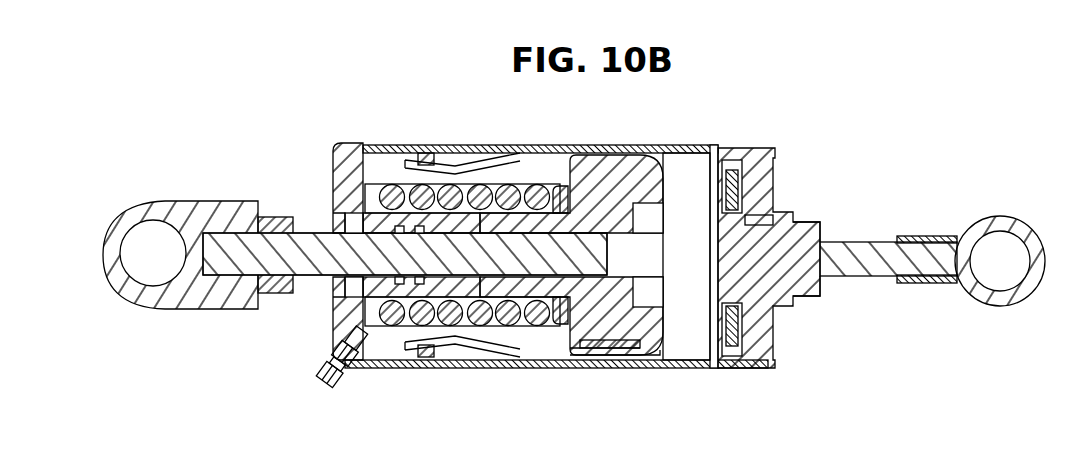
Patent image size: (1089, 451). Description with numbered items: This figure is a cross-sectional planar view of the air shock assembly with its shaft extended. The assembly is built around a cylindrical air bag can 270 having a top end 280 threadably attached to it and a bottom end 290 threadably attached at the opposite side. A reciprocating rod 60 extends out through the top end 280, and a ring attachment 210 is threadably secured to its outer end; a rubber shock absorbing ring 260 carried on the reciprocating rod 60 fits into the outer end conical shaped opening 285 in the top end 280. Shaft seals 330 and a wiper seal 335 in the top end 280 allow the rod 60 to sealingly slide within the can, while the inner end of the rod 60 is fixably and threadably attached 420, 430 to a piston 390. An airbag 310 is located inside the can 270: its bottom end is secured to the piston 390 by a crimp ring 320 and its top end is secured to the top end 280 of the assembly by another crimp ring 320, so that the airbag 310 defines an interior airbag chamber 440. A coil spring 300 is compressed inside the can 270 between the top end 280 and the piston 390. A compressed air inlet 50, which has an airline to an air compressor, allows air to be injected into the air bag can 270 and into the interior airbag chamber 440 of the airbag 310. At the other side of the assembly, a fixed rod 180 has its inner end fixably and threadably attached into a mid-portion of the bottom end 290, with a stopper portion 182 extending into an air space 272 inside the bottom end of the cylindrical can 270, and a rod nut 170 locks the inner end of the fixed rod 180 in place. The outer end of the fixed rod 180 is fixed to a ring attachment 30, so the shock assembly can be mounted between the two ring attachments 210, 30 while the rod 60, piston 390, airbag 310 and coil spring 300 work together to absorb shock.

The ring attachment 30 is at (1008, 225).
The compressed air inlet 50 is at (335, 378).
The reciprocating rod 60 is at (310, 240).
The rod nut 170 is at (821, 225).
The fixed rod 180 is at (848, 270).
The stopper portion 182 is at (738, 218).
The ring attachment 210 is at (130, 212).
The rubber shock absorbing ring 260 is at (292, 213).
The cylindrical air bag can 270 is at (685, 145).
The air space 272 is at (697, 335).
The top end 280 is at (333, 318).
The conical shaped opening 285 is at (330, 292).
The bottom end 290 is at (768, 150).
The coil spring 300 is at (515, 330).
The airbag 310 is at (545, 150).
The crimp ring 320 is at (435, 148).
The shaft seal 330 is at (413, 330).
The wiper seal 335 is at (340, 200).
The piston 390 is at (612, 203).
The threaded attachment 420 is at (545, 335).
The threaded attachment 430 is at (593, 333).
The interior airbag chamber 440 is at (625, 343).